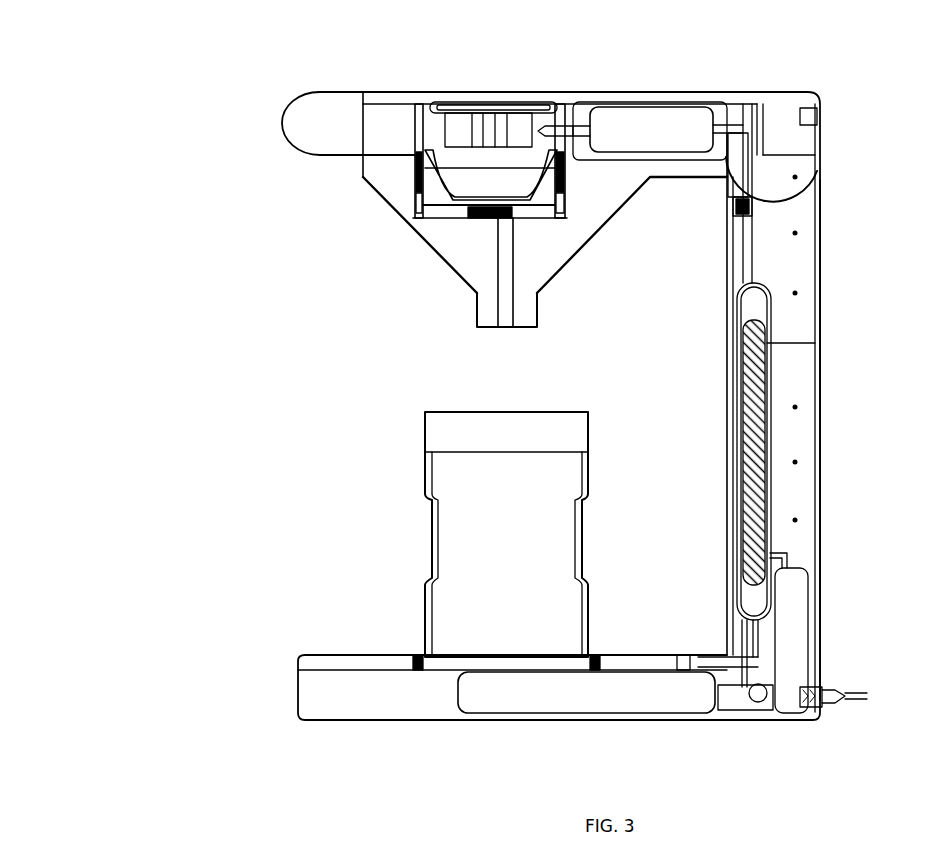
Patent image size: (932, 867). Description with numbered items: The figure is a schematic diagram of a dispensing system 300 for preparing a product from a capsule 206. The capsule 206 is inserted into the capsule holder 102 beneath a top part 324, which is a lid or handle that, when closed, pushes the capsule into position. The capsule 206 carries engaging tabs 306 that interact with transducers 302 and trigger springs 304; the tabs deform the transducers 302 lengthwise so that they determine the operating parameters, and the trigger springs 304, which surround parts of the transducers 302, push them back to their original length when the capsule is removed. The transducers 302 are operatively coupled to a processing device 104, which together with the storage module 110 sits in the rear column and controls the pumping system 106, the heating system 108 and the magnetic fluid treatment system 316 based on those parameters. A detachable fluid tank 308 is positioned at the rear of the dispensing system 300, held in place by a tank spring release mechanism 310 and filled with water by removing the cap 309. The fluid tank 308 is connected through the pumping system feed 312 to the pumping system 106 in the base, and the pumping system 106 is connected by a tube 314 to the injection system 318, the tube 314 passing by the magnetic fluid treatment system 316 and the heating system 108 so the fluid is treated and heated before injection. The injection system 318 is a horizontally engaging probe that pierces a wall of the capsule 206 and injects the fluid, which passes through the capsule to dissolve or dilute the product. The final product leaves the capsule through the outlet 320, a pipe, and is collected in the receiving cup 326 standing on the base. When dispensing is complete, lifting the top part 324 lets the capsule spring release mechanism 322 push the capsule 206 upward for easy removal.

The dispensing system 300 is at (128, 42).
The capsule holder 102 is at (416, 102).
The capsule 206 is at (498, 102).
The injection system 318 is at (574, 106).
The heating system 108 is at (650, 112).
The cap 309 is at (790, 102).
The top part 324 is at (282, 125).
The engaging tabs 306 is at (363, 176).
The trigger springs 304 is at (412, 192).
The transducers 302 is at (428, 220).
The capsule spring release mechanism 322 is at (487, 222).
The outlet 320 is at (533, 297).
The tank spring release mechanism 310 is at (766, 226).
The fluid tank 308 is at (818, 393).
The magnetic fluid treatment system 316 is at (742, 436).
The tube 314 is at (747, 640).
The pumping system feed 312 is at (757, 703).
The pumping system 106 is at (603, 698).
The receiving cup 326 is at (450, 530).
The processing device 104 is at (803, 618).
The storage module 110 is at (844, 633).